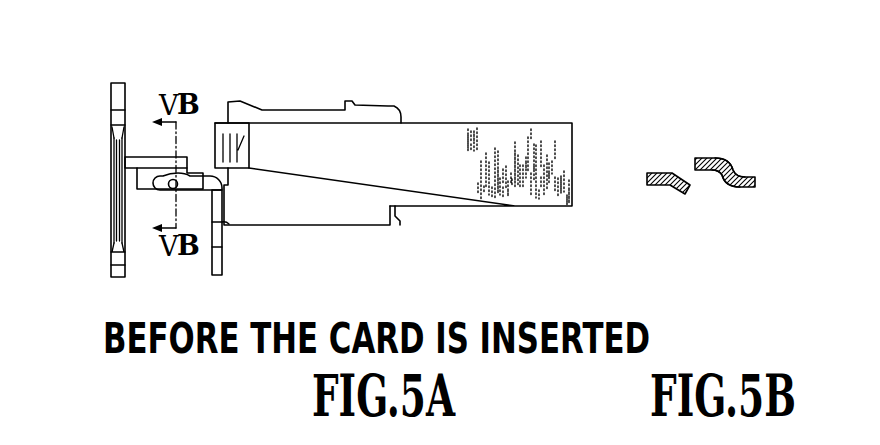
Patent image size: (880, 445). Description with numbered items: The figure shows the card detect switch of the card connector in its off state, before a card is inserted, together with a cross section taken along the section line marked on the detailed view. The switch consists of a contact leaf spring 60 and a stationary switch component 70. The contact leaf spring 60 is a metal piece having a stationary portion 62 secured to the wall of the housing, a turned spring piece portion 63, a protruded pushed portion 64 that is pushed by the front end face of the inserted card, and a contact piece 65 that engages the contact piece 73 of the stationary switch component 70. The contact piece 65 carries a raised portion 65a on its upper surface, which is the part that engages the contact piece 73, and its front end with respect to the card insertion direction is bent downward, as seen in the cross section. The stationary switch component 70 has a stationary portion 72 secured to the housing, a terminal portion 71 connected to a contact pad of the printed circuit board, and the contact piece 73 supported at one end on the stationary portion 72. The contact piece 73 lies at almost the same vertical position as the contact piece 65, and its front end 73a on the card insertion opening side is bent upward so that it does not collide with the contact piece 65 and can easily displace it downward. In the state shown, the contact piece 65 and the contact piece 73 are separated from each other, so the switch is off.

In FIG. 5A, the contact leaf spring 60 is at (439, 110).
In FIG. 5A, the stationary portion 62 is at (368, 110).
In FIG. 5A, the turned spring piece portion 63 is at (517, 180).
In FIG. 5A, the protruded pushed portion 64 is at (248, 140).
In FIG. 5A, the contact piece 65 is at (183, 175).
In FIG. 5B, the contact piece 65 is at (660, 172).
In FIG. 5A, the raised portion 65a is at (166, 186).
In FIG. 5A, the stationary switch component 70 is at (106, 118).
In FIG. 5A, the terminal portion 71 is at (117, 89).
In FIG. 5A, the stationary portion 72 is at (111, 198).
In FIG. 5A, the contact piece 73 is at (150, 157).
In FIG. 5B, the contact piece 73 is at (719, 125).
In FIG. 5B, the front end 73a is at (703, 157).